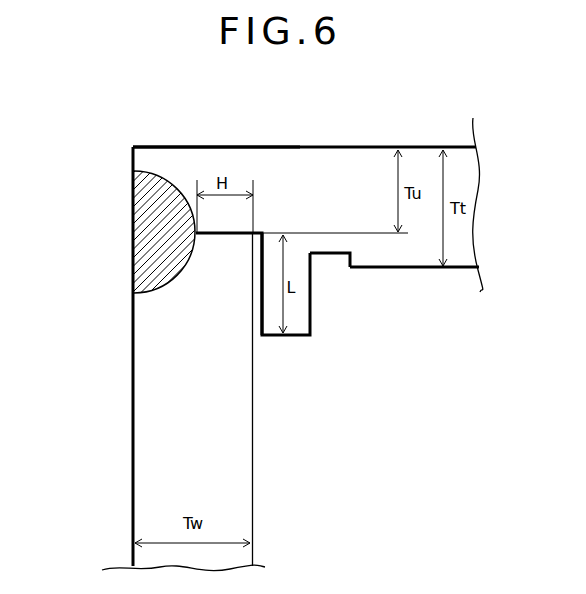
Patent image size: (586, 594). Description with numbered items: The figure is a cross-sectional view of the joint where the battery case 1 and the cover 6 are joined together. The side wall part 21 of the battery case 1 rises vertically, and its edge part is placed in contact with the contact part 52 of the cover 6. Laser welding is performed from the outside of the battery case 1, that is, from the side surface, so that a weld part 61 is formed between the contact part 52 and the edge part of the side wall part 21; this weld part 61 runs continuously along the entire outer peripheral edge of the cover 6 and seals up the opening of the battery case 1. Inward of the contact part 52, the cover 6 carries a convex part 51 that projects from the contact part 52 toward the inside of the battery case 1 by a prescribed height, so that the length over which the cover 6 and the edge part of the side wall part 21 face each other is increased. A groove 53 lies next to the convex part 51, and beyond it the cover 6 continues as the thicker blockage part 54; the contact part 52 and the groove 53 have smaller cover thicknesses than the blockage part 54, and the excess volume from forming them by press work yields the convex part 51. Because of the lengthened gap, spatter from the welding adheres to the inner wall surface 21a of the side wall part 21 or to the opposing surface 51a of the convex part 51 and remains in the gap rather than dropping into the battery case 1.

The battery case 1 is at (116, 500).
The cover 6 is at (355, 170).
The side wall part 21 is at (153, 430).
The inner wall surface 21a is at (253, 302).
The convex part 51 is at (296, 336).
The opposing surface 51a is at (262, 292).
The contact part 52 is at (175, 170).
The groove 53 is at (327, 255).
The blockage part 54 is at (425, 268).
The weld part 61 is at (138, 197).